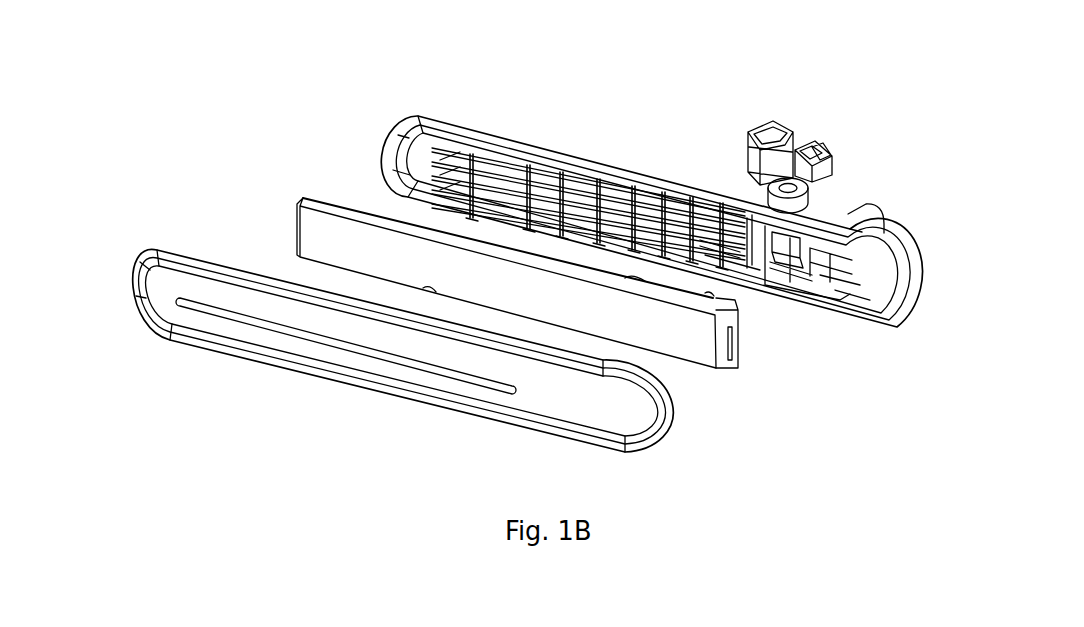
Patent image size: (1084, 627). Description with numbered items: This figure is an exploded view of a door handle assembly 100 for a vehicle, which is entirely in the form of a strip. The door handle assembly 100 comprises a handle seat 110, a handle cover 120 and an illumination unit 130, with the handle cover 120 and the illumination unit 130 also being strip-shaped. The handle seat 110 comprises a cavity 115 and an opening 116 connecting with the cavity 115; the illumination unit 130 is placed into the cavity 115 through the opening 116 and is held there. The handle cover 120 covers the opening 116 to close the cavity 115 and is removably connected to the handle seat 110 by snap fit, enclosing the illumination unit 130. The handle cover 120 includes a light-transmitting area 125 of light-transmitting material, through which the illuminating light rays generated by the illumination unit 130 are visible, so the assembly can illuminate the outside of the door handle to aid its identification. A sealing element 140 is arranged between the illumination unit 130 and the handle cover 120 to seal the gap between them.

The door handle assembly 100 is at (884, 126).
The handle seat 110 is at (850, 216).
The cavity 115 is at (778, 272).
The opening 116 is at (385, 154).
The handle cover 120 is at (140, 302).
The light-transmitting area 125 is at (250, 322).
The illumination unit 130 is at (731, 358).
The sealing element 140 is at (686, 360).